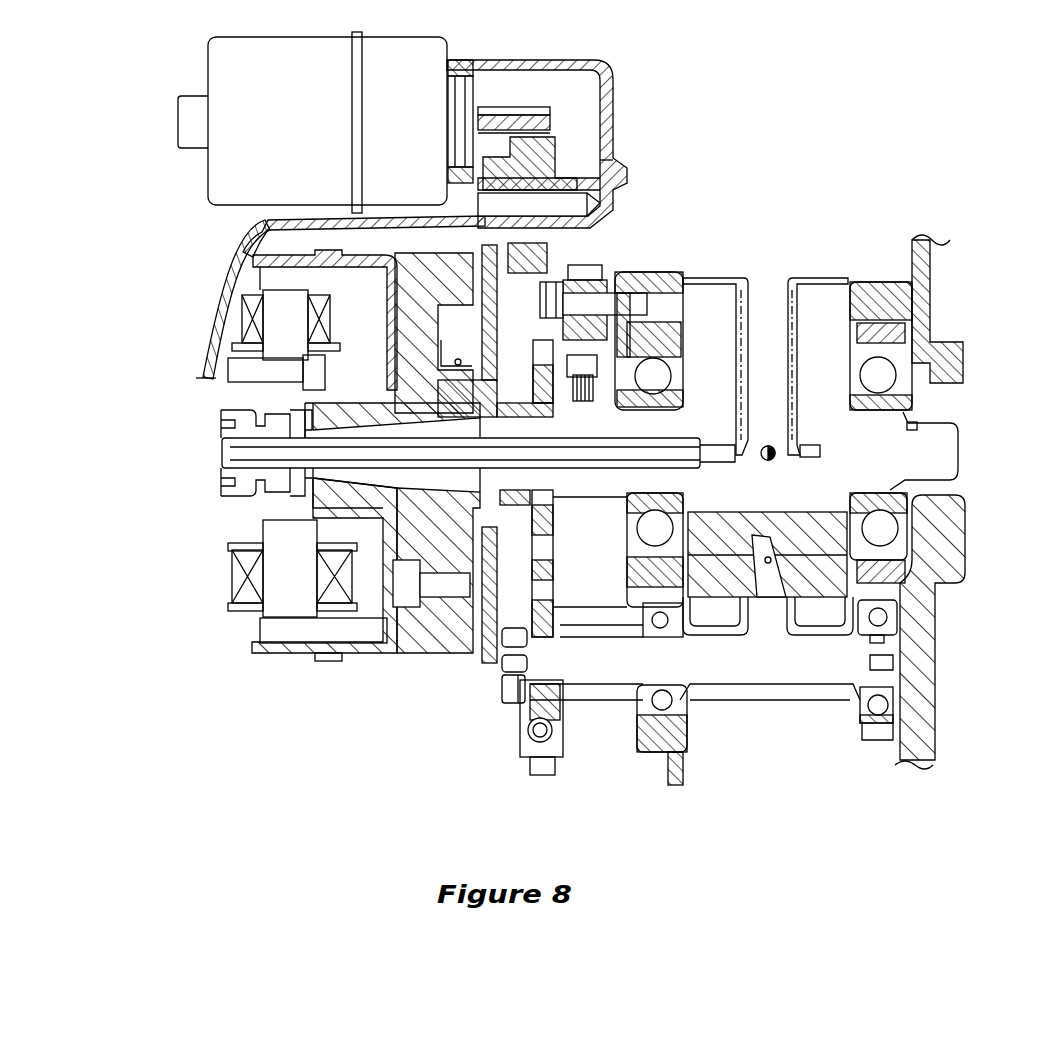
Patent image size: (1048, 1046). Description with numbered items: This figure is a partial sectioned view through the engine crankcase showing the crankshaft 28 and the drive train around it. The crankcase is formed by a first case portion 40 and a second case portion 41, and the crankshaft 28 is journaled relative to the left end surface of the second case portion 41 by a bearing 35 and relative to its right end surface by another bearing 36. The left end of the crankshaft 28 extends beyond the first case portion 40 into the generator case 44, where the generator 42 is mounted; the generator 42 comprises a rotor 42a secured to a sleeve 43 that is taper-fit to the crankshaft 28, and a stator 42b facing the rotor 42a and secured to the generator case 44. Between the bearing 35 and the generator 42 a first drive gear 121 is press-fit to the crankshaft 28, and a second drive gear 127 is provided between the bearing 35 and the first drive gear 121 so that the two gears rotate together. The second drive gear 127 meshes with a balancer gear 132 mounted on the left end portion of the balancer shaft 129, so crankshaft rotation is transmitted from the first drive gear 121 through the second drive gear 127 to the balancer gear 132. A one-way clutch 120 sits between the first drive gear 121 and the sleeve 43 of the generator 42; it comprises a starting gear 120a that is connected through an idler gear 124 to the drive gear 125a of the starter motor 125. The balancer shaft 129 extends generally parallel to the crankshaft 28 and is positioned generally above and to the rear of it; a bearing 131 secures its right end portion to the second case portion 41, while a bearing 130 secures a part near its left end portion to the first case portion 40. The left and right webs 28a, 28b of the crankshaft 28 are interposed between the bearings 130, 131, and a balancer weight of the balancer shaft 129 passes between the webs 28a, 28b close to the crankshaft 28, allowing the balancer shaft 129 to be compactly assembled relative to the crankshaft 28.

The starter motor 125 is at (208, 60).
The drive gear of the starter motor 125a is at (550, 122).
The idler gear 124 is at (535, 158).
The one-way clutch 120 is at (250, 240).
The starting gear 120a is at (600, 204).
The first drive gear 121 is at (565, 322).
The generator 42 is at (221, 455).
The rotor 42a is at (262, 272).
The stator 42b is at (242, 318).
The generator case 44 is at (207, 353).
The sleeve 43 is at (297, 404).
The bearing 36 is at (878, 335).
The crankshaft 28 is at (925, 447).
The bearing 35 is at (625, 547).
The second drive gear 127 is at (532, 540).
The left web 28a is at (713, 618).
The right web 28b is at (825, 618).
The balancer shaft 129 is at (783, 667).
The bearing 130 is at (686, 722).
The bearing 131 is at (870, 740).
The second case portion 41 is at (930, 730).
The first case portion 40 is at (645, 752).
The balancer gear 132 is at (545, 765).